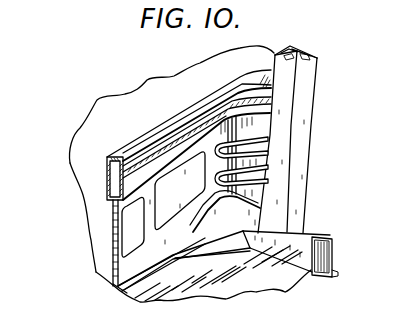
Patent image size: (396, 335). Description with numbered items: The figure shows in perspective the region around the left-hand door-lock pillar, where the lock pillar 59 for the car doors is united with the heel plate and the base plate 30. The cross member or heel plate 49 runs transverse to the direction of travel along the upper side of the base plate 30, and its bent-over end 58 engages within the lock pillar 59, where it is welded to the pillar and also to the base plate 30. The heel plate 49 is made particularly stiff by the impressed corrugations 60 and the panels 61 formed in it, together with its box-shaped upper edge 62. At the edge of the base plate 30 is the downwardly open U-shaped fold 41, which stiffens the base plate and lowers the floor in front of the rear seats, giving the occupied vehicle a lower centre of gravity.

The base plate 30 is at (210, 287).
The downwardly open U-shaped fold 41 is at (320, 262).
The cross member (heel plate) 49 is at (149, 243).
The bent-over end 58 is at (268, 139).
The lock pillar 59 is at (278, 198).
The impressed corrugations 60 is at (232, 184).
The panels 61 is at (170, 213).
The box-shaped upper edge 62 is at (107, 183).